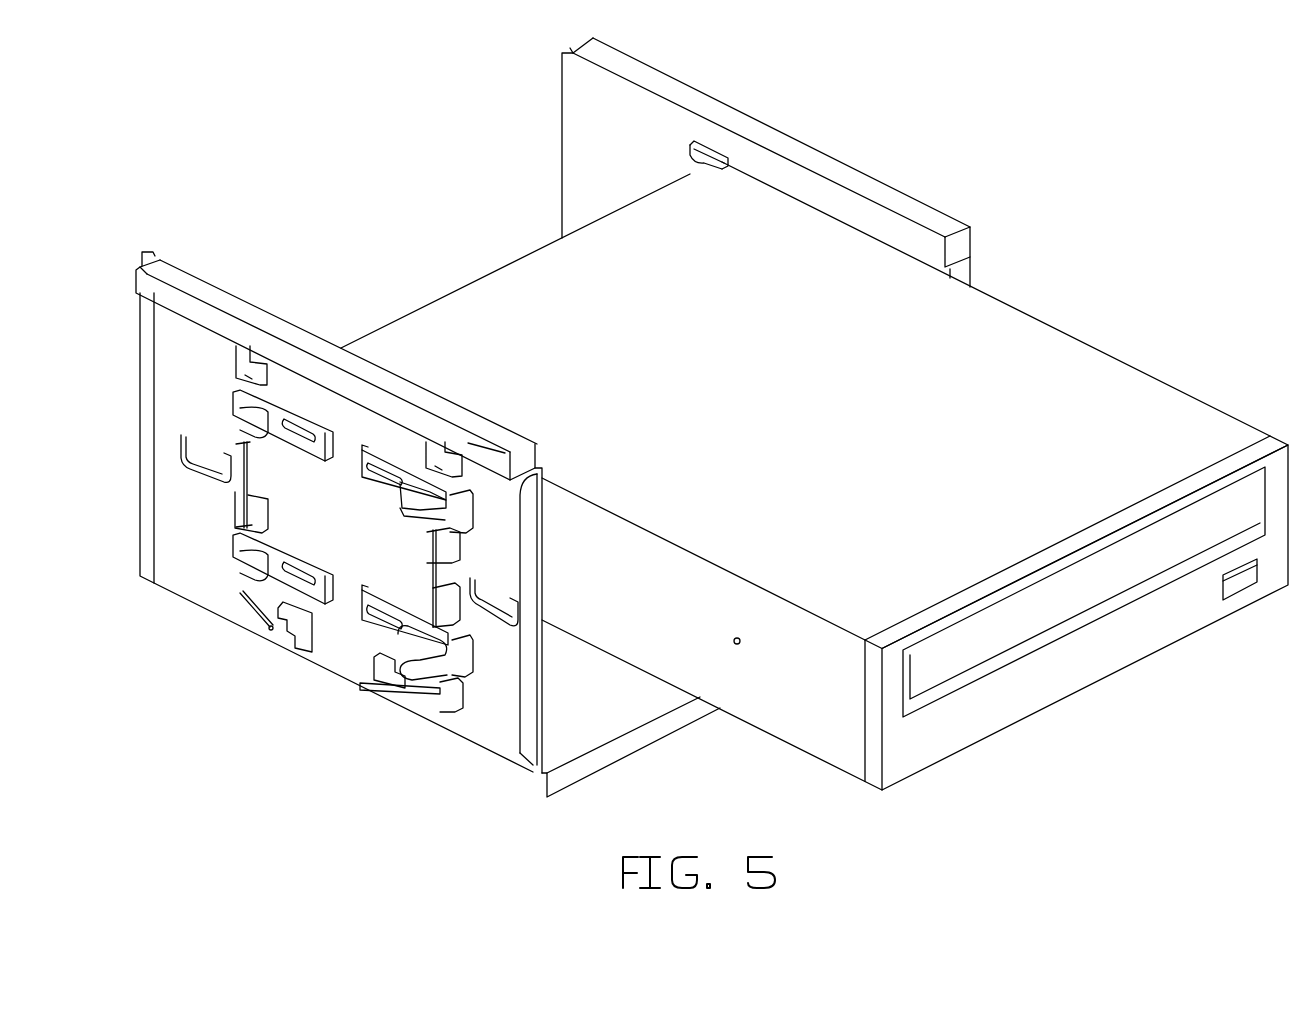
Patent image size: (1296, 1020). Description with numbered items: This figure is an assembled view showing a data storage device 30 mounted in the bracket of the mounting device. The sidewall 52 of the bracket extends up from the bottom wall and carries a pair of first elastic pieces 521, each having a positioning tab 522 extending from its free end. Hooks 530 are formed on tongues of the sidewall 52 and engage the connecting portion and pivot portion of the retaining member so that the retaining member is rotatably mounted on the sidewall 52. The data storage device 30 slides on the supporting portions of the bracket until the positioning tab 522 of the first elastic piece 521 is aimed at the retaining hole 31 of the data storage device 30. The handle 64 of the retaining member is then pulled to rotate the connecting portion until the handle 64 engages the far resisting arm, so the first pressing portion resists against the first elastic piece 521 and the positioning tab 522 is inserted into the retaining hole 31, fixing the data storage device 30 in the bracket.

The data storage device 30 is at (814, 493).
The retaining hole 31 is at (739, 648).
The sidewall 52 is at (383, 500).
The first elastic piece 521 is at (365, 450).
The positioning tab 522 is at (460, 508).
The hook 530 is at (418, 533).
The handle 64 is at (422, 693).